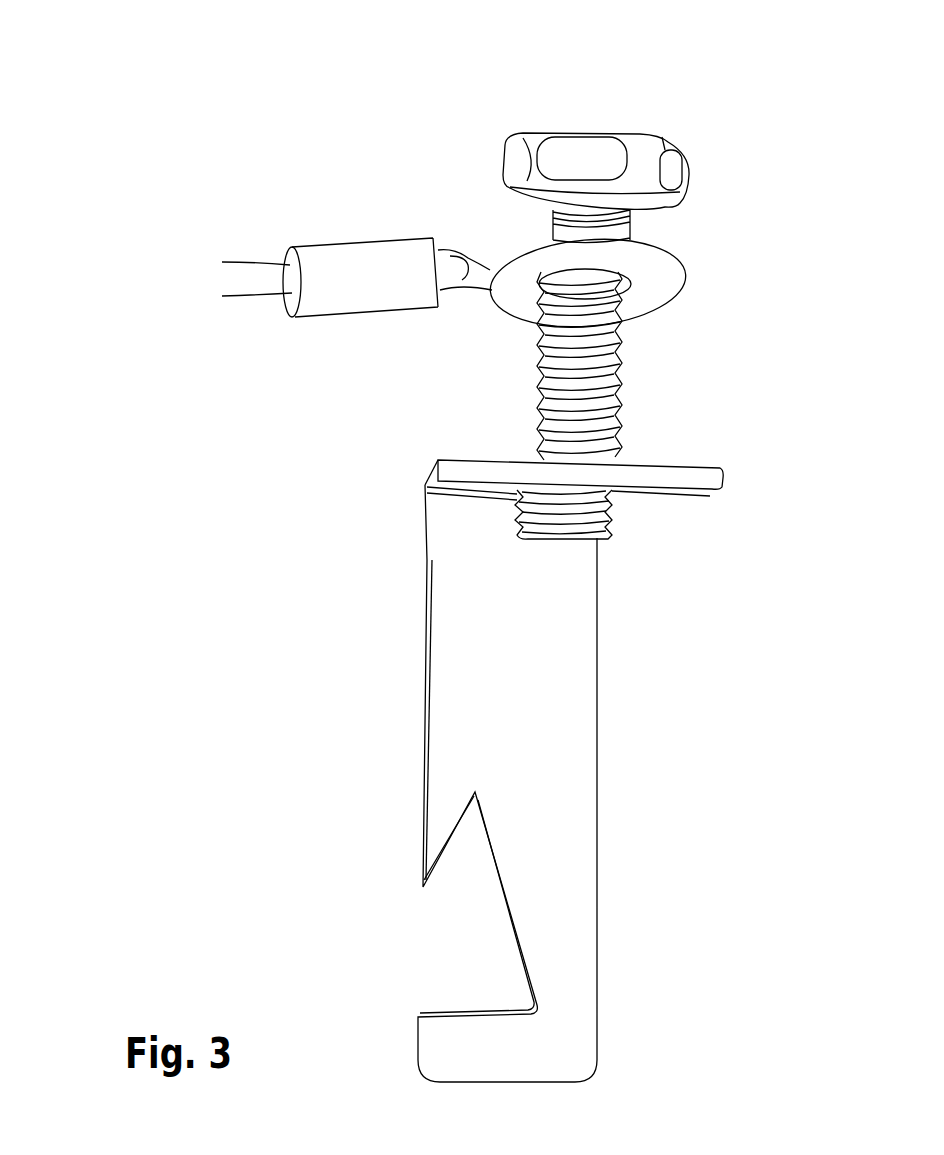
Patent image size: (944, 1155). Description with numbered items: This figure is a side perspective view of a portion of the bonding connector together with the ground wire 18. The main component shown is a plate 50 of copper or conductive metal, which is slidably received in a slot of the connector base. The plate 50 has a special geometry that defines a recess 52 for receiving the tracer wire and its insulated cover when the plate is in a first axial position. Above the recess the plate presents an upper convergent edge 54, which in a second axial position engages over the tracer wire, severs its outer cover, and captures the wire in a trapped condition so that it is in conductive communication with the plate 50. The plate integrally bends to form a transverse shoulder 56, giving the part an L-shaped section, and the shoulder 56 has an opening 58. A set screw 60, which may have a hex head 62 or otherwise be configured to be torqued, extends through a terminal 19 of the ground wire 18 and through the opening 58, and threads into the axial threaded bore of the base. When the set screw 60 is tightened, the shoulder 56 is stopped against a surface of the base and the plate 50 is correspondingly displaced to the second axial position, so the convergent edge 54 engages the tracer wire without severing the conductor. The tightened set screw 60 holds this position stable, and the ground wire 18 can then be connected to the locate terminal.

The ground wire 18 is at (258, 272).
The terminal 19 is at (667, 278).
The plate 50 is at (404, 584).
The recess 52 is at (508, 935).
The upper convergent edge 54 is at (450, 837).
The transverse shoulder 56 is at (695, 492).
The opening 58 is at (613, 493).
The set screw 60 is at (603, 388).
The hex head 62 is at (587, 147).